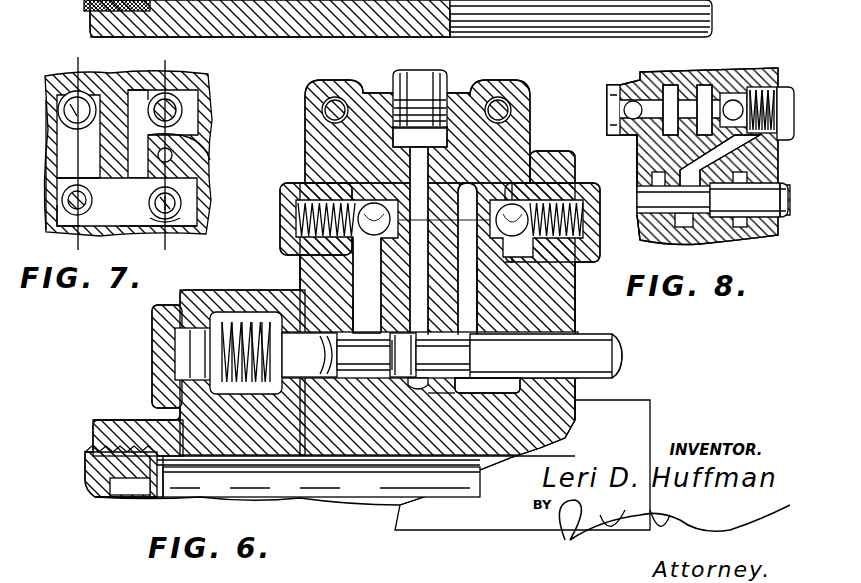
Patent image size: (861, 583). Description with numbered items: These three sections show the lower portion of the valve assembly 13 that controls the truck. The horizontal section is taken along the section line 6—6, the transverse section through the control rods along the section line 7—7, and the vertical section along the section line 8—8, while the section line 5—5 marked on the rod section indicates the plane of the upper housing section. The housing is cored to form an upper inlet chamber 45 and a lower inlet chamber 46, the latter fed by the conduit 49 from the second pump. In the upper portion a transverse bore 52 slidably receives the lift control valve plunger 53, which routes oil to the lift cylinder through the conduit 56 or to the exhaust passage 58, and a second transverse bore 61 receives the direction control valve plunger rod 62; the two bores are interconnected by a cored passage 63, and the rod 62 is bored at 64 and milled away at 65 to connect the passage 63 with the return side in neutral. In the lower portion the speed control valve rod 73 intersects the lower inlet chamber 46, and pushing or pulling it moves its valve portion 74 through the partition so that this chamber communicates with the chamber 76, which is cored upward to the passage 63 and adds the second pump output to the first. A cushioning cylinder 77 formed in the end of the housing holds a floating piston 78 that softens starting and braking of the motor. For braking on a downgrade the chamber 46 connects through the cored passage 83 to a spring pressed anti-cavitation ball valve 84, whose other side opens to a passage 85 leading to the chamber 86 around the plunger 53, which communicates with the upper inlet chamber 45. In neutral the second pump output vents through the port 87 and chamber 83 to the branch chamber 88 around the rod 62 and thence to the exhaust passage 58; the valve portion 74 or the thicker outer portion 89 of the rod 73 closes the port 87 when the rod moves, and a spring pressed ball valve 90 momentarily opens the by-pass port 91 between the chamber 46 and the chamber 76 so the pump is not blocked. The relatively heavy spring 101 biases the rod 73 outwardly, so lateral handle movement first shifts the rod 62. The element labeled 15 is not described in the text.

In FIG. 7, the section line 5- 5 is at (168, 61).
In FIG. 7, the section line 6— 6 is at (80, 58).
In FIG. 6, the section line 7— 7 is at (358, 200).
In FIG. 6, the section line 8— 8 is at (371, 210).
In FIG. 8, the section line 8— 8 is at (640, 218).
In FIG. 6, the valve assembly 13 is at (103, 428).
In FIG. 6, the passage 15 is at (367, 313).
In FIG. 8, the upper inlet chamber 45 is at (653, 218).
In FIG. 6, the lower inlet chamber 46 is at (438, 133).
In FIG. 8, the lower inlet chamber 46 is at (668, 90).
In FIG. 6, the conduit 49 is at (418, 80).
In FIG. 7, the transverse bore 52 is at (182, 100).
In FIG. 7, the lift control valve plunger 53 is at (178, 114).
In FIG. 8, the lift control valve plunger 53 is at (780, 216).
In FIG. 6, the conduit 56 is at (273, 353).
In FIG. 7, the exhaust passage 58 is at (173, 153).
In FIG. 7, the second transverse bore 61 is at (202, 170).
In FIG. 7, the direction control valve plunger rod 62 is at (183, 200).
In FIG. 7, the cored passage 63 is at (148, 220).
In FIG. 6, the cored passage 63 is at (393, 372).
In FIG. 7, the bore 64 is at (180, 210).
In FIG. 7, the milled area 65 is at (176, 218).
In FIG. 7, the speed control valve rod 73 is at (93, 200).
In FIG. 6, the speed control valve rod 73 is at (614, 355).
In FIG. 7, the valve portion 74 is at (72, 214).
In FIG. 6, the valve portion 74 is at (376, 355).
In FIG. 7, the chamber 76 is at (68, 148).
In FIG. 6, the chamber 76 is at (352, 278).
In FIG. 8, the chamber 76 is at (637, 146).
In FIG. 6, the cushioning cylinder 77 is at (281, 2).
In FIG. 6, the piston 78 is at (351, 2).
In FIG. 6, the cored passage 83 is at (473, 299).
In FIG. 8, the cored passage 83 is at (704, 82).
In FIG. 6, the anti-cavitation ball valve 84 is at (514, 204).
In FIG. 8, the anti-cavitation ball valve 84 is at (740, 104).
In FIG. 6, the passage 85 is at (531, 210).
In FIG. 8, the passage 85 is at (752, 100).
In FIG. 7, the chamber 86 is at (150, 96).
In FIG. 8, the chamber 86 is at (690, 234).
In FIG. 6, the port 87 is at (447, 410).
In FIG. 6, the branch chamber 88 is at (522, 385).
In FIG. 8, the branch chamber 88 is at (740, 216).
In FIG. 6, the thicker outer portion 89 is at (519, 356).
In FIG. 7, the spring pressed ball valve 90 is at (70, 100).
In FIG. 6, the spring pressed ball valve 90 is at (367, 285).
In FIG. 8, the spring pressed ball valve 90 is at (625, 95).
In FIG. 6, the by-pass port 91 is at (413, 203).
In FIG. 8, the by-pass port 91 is at (650, 96).
In FIG. 6, the spring 101 is at (200, 353).